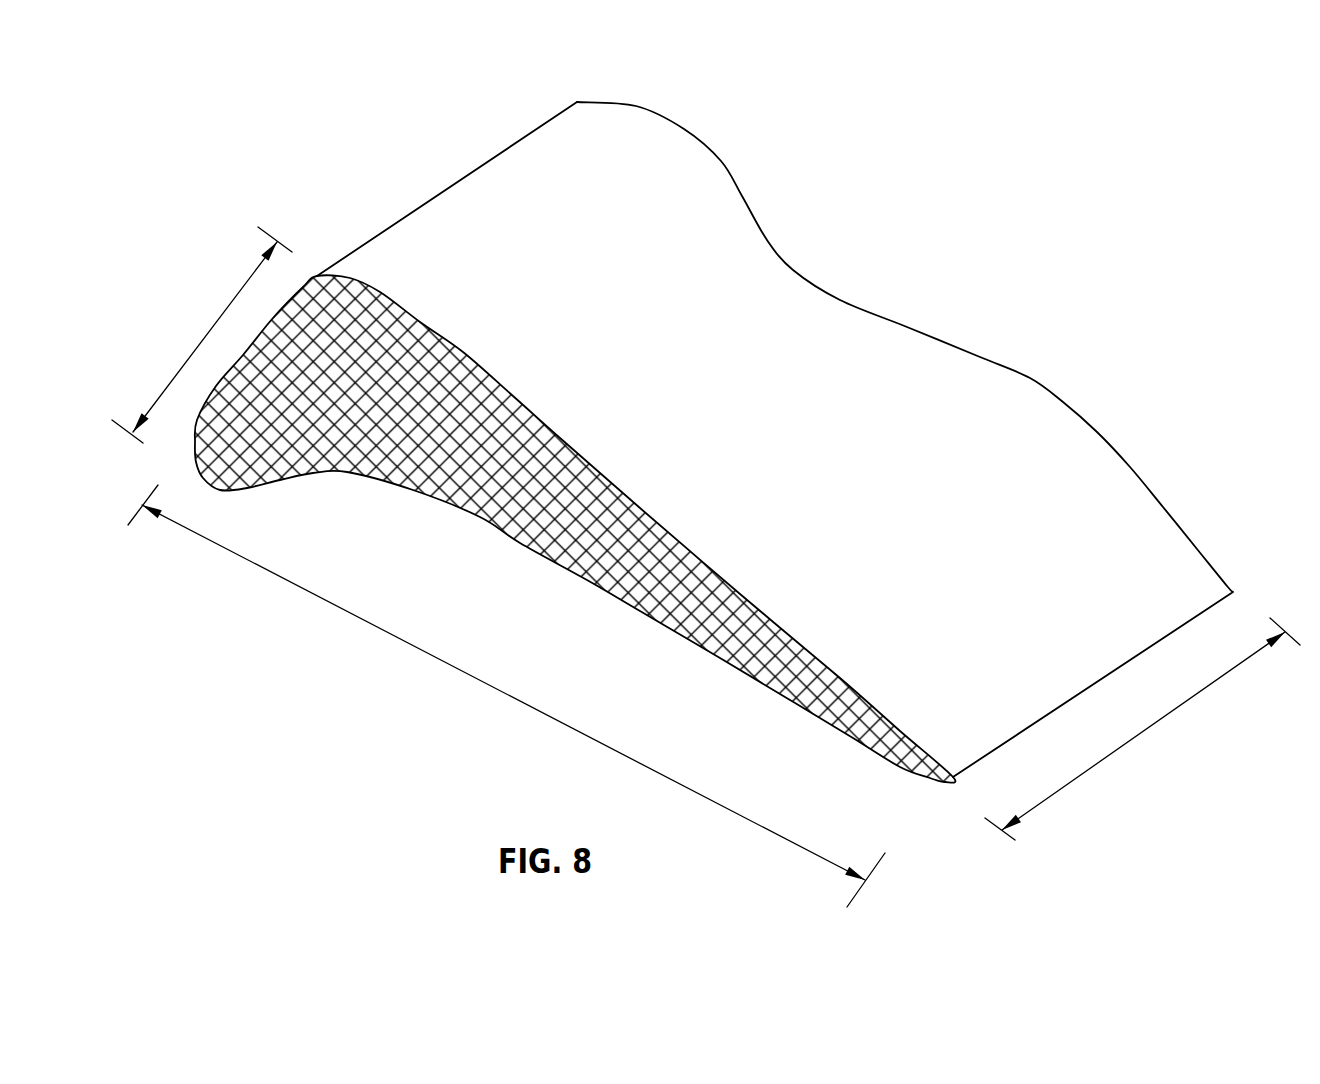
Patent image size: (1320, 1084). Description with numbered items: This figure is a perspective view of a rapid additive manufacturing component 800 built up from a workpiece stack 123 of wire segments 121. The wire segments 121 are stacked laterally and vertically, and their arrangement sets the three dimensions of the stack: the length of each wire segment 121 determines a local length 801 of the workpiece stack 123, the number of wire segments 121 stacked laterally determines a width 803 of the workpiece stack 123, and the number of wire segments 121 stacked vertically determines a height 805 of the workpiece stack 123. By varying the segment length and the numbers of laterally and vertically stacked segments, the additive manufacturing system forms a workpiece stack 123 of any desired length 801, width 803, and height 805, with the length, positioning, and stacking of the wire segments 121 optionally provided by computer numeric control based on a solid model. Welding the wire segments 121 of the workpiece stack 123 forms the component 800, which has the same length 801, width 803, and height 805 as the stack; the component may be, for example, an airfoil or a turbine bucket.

The component 800 is at (790, 440).
The wire segment 121 is at (488, 403).
The workpiece stack 123 is at (378, 142).
The length 801 is at (1142, 728).
The width 803 is at (503, 693).
The height 805 is at (205, 337).